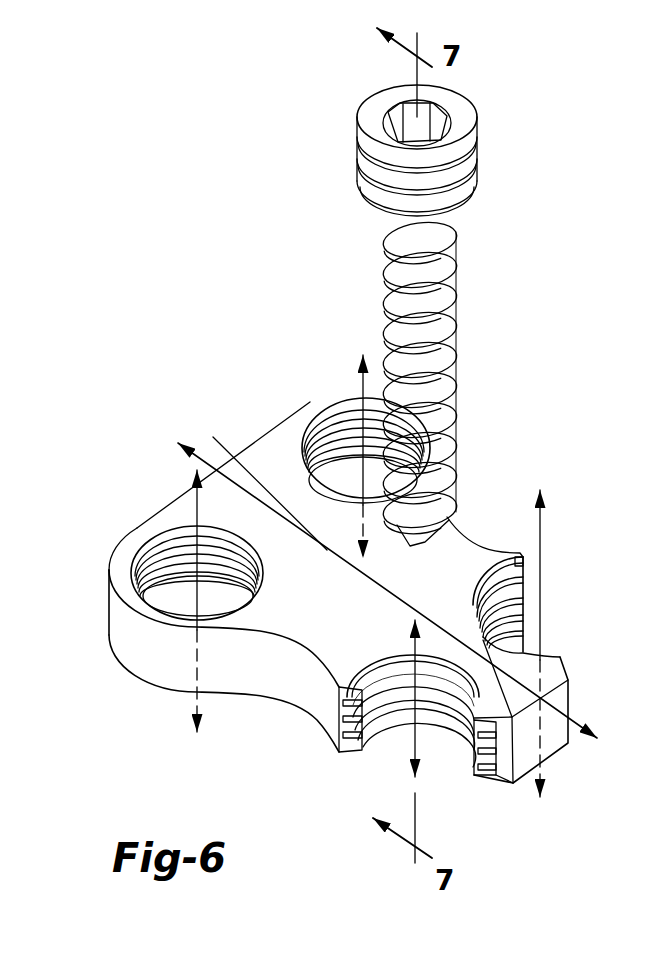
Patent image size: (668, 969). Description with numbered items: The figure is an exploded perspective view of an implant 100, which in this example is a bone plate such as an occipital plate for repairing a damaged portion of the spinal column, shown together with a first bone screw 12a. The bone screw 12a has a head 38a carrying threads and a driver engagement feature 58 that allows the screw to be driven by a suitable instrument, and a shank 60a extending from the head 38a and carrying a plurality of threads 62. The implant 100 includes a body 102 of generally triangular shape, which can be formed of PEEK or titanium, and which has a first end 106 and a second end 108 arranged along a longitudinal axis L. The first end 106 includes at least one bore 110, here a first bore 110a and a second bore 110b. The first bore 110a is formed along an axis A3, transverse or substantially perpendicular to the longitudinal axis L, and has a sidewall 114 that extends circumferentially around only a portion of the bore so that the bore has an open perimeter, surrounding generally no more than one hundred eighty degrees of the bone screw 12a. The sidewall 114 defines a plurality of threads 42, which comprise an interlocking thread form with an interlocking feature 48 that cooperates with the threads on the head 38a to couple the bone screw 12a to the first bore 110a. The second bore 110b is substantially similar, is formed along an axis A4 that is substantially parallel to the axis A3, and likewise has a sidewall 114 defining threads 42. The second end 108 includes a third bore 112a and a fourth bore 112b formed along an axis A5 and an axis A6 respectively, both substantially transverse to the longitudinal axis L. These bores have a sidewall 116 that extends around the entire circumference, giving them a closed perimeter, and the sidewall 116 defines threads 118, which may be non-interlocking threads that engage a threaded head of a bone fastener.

The implant 100 is at (162, 406).
The first bone screw 12a is at (493, 106).
The driver engagement feature 58 is at (402, 110).
The head 38a is at (478, 168).
The shank 60a is at (474, 293).
The threads 62 is at (460, 392).
The body 102 is at (287, 404).
The second end 108 is at (115, 686).
The third bore 112a is at (332, 402).
The fourth bore 112b is at (136, 536).
The sidewall 116 is at (130, 557).
The threads 118 is at (180, 540).
The bore 110 is at (556, 599).
The first bore 110a is at (437, 758).
The second bore 110b is at (562, 629).
The sidewall 114 is at (338, 756).
The threads 42 is at (488, 583).
The first end 106 is at (568, 769).
The interlocking feature 48 is at (480, 778).
The axis A3 is at (410, 642).
The axis A4 is at (542, 530).
The axis A5 is at (362, 386).
The axis A6 is at (196, 706).
The longitudinal axis L is at (602, 734).